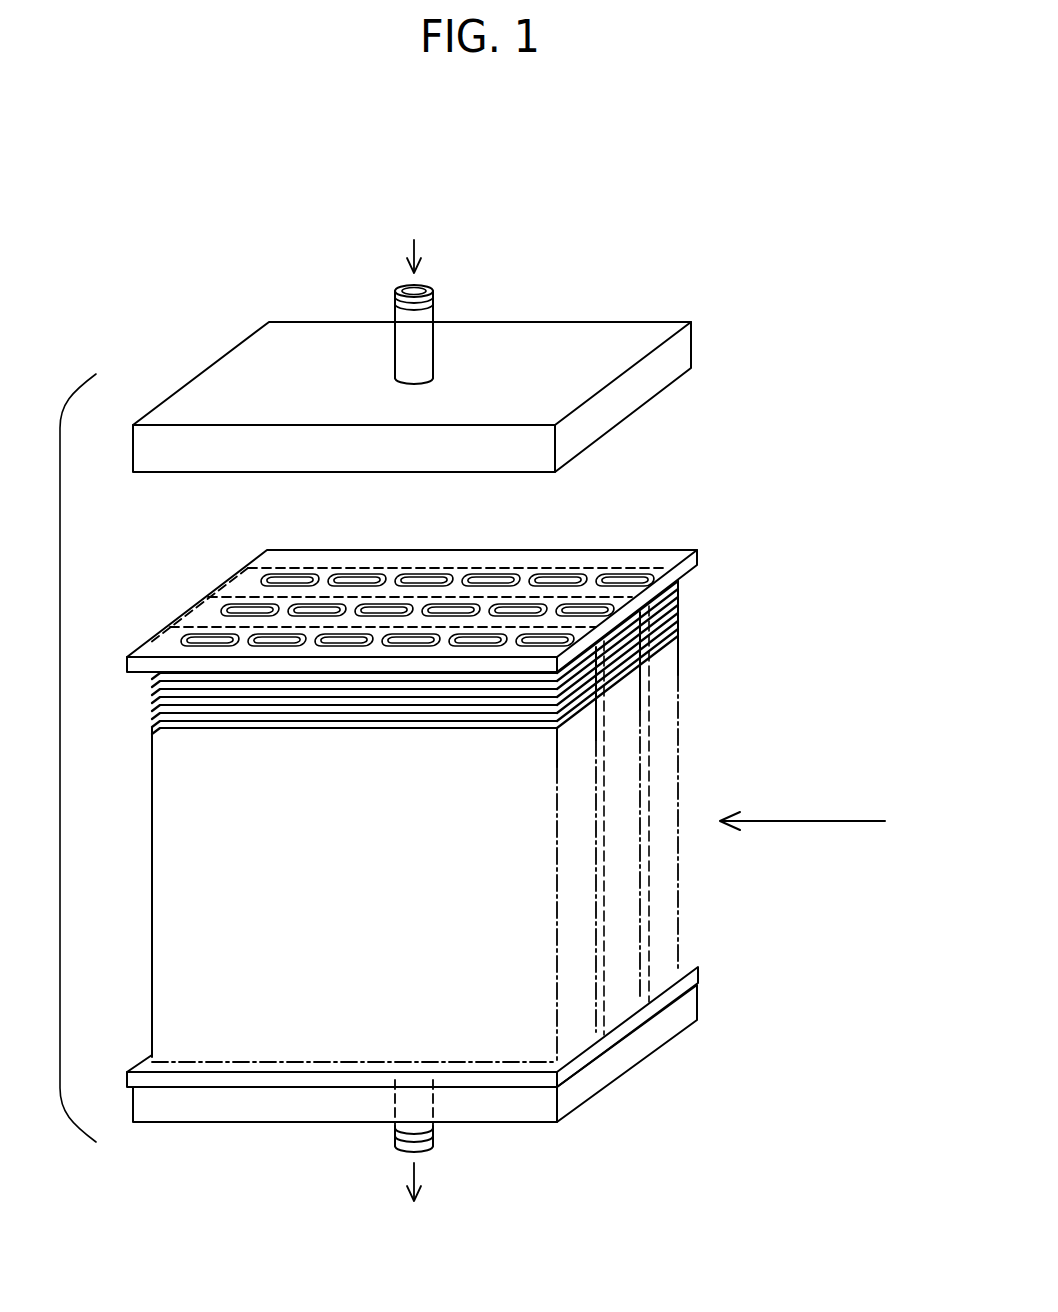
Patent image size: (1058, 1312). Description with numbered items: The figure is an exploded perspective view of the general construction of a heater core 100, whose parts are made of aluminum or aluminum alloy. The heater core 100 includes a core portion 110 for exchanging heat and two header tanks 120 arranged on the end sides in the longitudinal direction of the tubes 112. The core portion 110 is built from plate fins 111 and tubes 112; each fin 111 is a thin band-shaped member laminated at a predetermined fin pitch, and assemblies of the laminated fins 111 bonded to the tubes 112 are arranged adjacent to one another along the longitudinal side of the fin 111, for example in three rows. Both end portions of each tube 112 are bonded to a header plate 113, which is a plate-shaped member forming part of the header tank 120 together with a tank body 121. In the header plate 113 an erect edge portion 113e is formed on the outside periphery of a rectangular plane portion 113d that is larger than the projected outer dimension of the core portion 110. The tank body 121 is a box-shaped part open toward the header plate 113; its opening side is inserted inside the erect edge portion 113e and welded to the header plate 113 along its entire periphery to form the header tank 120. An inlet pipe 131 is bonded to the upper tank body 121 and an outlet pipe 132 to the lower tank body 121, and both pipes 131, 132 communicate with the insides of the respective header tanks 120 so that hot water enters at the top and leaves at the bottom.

The heater core 100 is at (652, 292).
The core portion 110 is at (797, 578).
The plate fin 111 is at (674, 616).
The tube 112 is at (676, 576).
The header plate 113 is at (447, 788).
The rectangular plane portion 113d is at (236, 594).
The erect edge portion 113e is at (189, 614).
The header tank 120 is at (797, 338).
The tank body 121 is at (680, 356).
The inlet pipe 131 is at (421, 336).
The outlet pipe 132 is at (430, 1131).